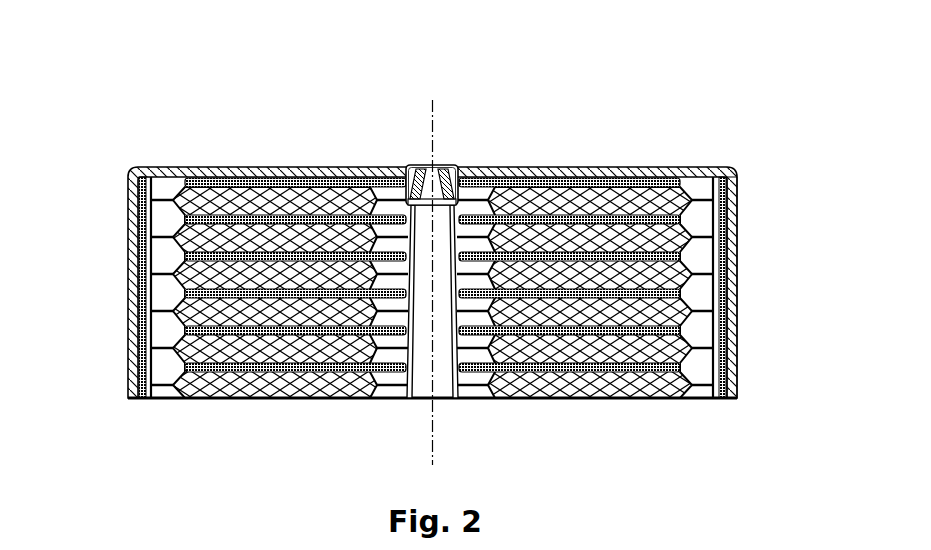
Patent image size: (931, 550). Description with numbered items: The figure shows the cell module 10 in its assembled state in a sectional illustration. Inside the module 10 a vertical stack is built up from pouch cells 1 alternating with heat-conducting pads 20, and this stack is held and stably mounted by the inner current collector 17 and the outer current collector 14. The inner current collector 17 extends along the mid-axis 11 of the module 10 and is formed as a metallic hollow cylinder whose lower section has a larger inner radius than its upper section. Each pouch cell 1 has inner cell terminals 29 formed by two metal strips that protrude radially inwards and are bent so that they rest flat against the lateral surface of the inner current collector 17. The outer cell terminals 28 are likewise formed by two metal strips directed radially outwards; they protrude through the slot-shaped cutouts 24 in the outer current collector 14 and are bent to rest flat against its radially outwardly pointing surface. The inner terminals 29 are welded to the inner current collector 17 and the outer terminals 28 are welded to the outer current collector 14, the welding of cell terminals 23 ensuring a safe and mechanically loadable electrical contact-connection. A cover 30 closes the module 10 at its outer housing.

The module 10 is at (709, 88).
The pouch cell 1 is at (191, 212).
The inner cell terminal 29 is at (390, 238).
The inner current collector 17 is at (413, 186).
The mid-axis 11 is at (441, 128).
The heat-conducting pad 20 is at (588, 212).
The outer cell terminal 28 is at (124, 184).
The outer current collector 14 is at (131, 254).
The cutouts 24 is at (120, 320).
The cover 30 is at (746, 182).
The welding of cell terminals 23 is at (155, 394).